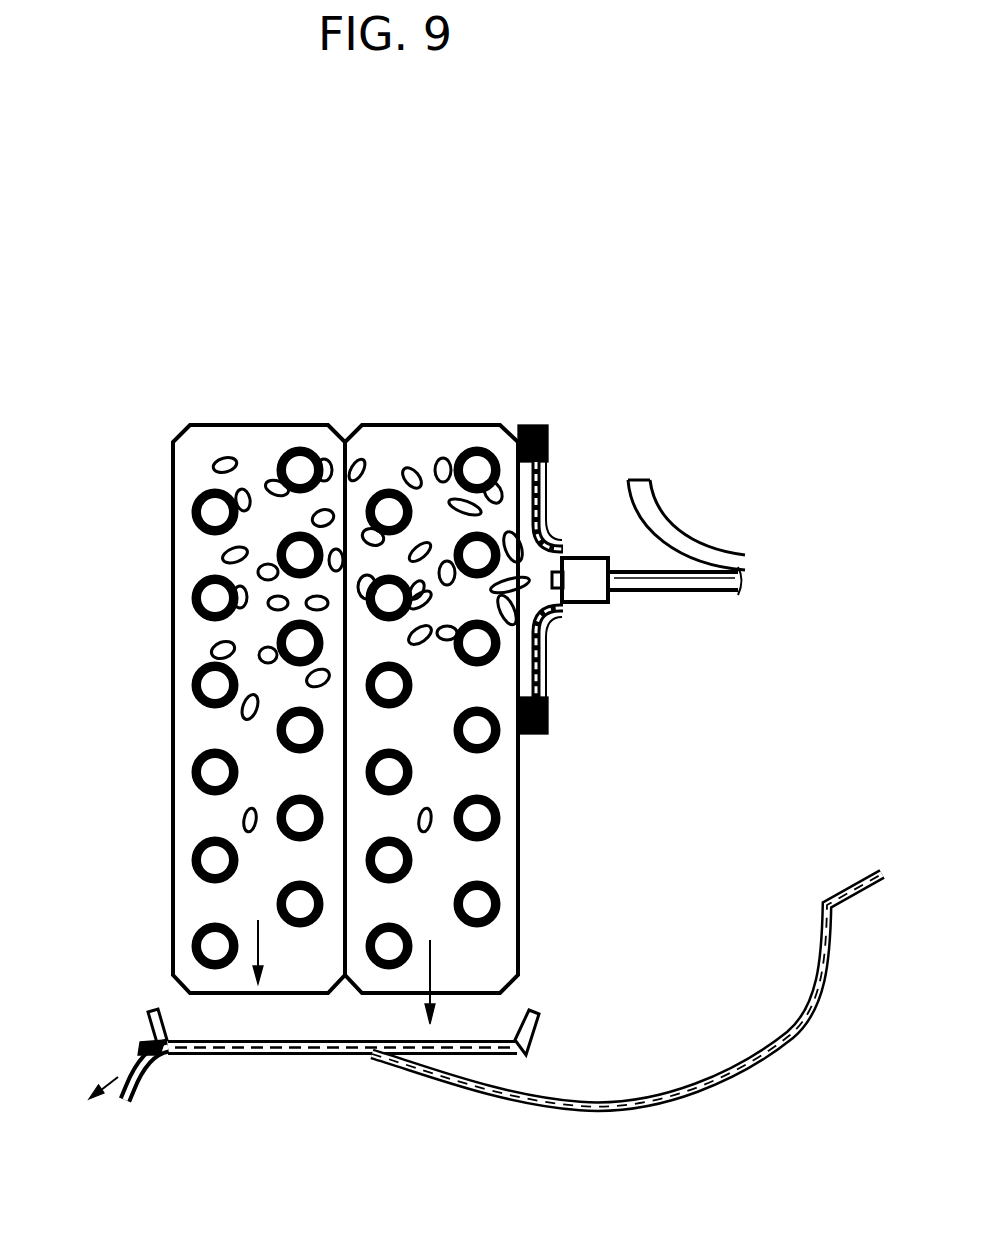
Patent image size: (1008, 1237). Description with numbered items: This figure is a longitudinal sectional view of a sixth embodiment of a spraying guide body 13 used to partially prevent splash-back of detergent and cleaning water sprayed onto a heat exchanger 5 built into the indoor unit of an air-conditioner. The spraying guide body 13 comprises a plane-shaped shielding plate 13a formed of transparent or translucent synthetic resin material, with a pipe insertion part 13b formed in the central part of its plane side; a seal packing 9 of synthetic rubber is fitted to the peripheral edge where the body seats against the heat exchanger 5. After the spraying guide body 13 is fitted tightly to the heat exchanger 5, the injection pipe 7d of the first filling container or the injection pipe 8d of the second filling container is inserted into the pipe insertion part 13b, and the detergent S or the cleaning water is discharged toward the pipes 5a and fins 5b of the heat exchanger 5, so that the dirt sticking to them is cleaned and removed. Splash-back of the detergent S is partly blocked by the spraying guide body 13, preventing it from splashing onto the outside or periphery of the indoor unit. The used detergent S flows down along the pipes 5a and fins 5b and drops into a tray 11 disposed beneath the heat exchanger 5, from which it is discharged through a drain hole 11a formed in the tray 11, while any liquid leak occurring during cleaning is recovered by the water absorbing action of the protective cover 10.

The heat exchanger 5 is at (249, 397).
The pipes 5a is at (203, 612).
The fins 5b is at (200, 467).
The detergent S is at (243, 500).
The seal packing 9 is at (533, 425).
The spraying guide body 13 is at (566, 517).
The shielding plate 13a is at (543, 487).
The pipe insertion part 13b is at (593, 592).
The injection pipe 7d is at (685, 592).
The injection pipe 8d is at (657, 498).
The protective cover 10 is at (608, 1112).
The tray 11 is at (268, 1060).
The drain hole 11a is at (148, 1038).